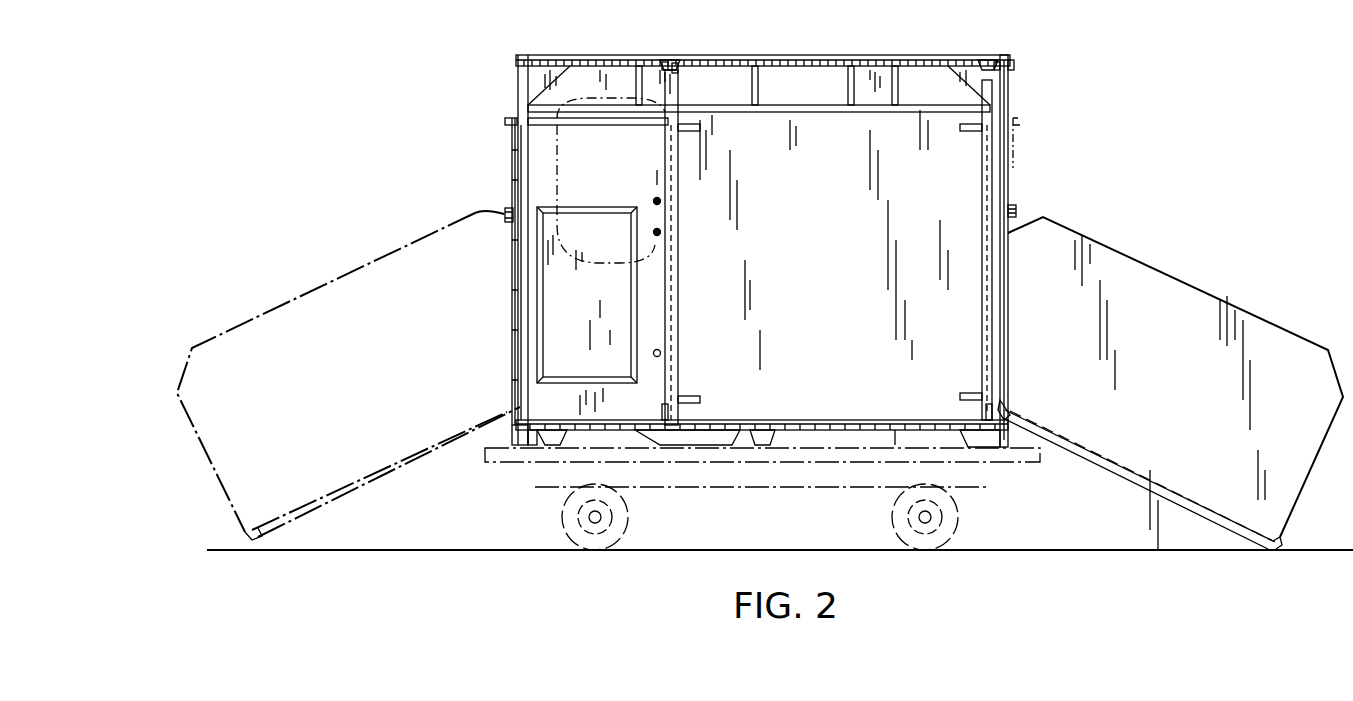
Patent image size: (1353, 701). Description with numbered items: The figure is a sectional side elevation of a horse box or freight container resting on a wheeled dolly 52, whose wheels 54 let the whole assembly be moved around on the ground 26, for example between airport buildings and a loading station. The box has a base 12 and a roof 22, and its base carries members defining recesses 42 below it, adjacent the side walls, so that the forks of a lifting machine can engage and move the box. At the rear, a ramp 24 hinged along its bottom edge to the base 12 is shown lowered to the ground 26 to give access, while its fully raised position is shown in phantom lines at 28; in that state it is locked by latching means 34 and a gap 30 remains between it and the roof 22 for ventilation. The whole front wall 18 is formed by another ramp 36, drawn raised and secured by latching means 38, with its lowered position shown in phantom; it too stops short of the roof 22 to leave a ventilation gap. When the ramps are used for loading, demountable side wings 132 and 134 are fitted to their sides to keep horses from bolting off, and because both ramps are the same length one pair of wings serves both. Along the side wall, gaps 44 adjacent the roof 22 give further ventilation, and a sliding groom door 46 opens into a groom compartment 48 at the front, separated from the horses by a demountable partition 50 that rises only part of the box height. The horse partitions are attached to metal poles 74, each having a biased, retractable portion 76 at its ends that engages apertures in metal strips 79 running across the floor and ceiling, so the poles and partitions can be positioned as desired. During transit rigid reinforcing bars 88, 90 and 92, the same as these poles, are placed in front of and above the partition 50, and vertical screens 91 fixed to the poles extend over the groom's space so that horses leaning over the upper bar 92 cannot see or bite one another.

The base 12 is at (812, 405).
The front wall 18 is at (480, 180).
The roof 22 is at (830, 40).
The ramp 24 is at (1125, 472).
The ground 26 is at (1130, 552).
The raised ramp position 28 is at (1008, 141).
The gap 30 is at (1032, 91).
The latching means 34 is at (1014, 210).
The ramp 36 is at (365, 487).
The latching means 38 is at (505, 213).
The recesses 42 is at (850, 445).
The gaps 44 is at (572, 83).
The sliding groom door 46 is at (600, 320).
The groom compartment 48 is at (551, 420).
The demountable partition 50 is at (665, 332).
The wheeled dolly 52 is at (758, 488).
The wheel 54 is at (570, 512).
The metal poles 74 is at (678, 286).
The biased portion 76 is at (1010, 66).
The metal strips 79 is at (986, 60).
The reinforcing bar 88 is at (654, 354).
The reinforcing bar 90 is at (654, 233).
The vertical screens 91 is at (557, 146).
The upper bar 92 is at (657, 197).
The side wing 132 is at (306, 496).
The side wing 134 is at (1175, 381).